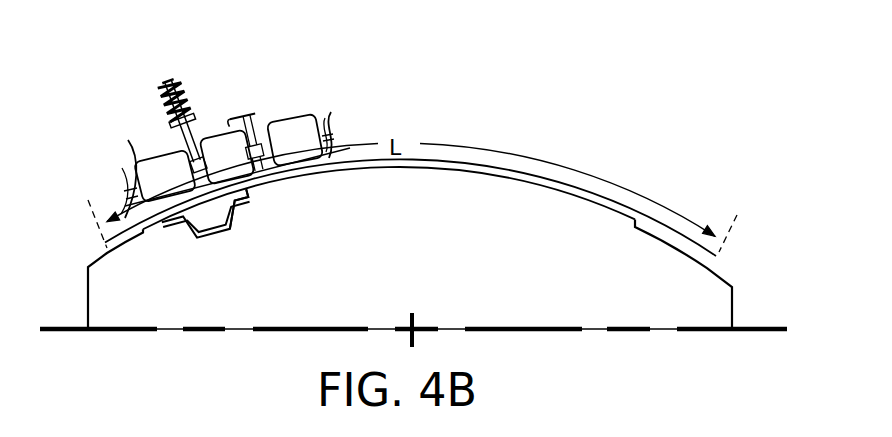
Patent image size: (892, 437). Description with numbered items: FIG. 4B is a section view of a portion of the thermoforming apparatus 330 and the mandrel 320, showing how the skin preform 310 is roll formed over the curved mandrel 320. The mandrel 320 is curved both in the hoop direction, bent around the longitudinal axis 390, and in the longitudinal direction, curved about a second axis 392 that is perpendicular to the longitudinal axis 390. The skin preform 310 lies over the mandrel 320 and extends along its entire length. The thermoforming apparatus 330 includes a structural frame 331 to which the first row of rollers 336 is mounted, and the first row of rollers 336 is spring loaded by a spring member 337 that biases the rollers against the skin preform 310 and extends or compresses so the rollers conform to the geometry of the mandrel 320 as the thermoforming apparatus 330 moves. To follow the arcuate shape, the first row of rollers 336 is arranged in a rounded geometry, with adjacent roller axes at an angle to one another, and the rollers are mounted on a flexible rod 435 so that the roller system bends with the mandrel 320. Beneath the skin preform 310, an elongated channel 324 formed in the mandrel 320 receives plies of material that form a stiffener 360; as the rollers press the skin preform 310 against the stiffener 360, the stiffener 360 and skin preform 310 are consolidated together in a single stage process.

The skin preform 310 is at (528, 177).
The mandrel 320 is at (420, 251).
The channel 324 is at (236, 214).
The thermoforming apparatus 330 is at (212, 123).
The structural frame 331 is at (163, 86).
The first row of rollers 336 is at (301, 101).
The spring member 337 is at (181, 92).
The stiffener 360 is at (188, 231).
The longitudinal axis 390 is at (757, 331).
The second axis 392 is at (418, 323).
The flexible rod 435 is at (127, 140).